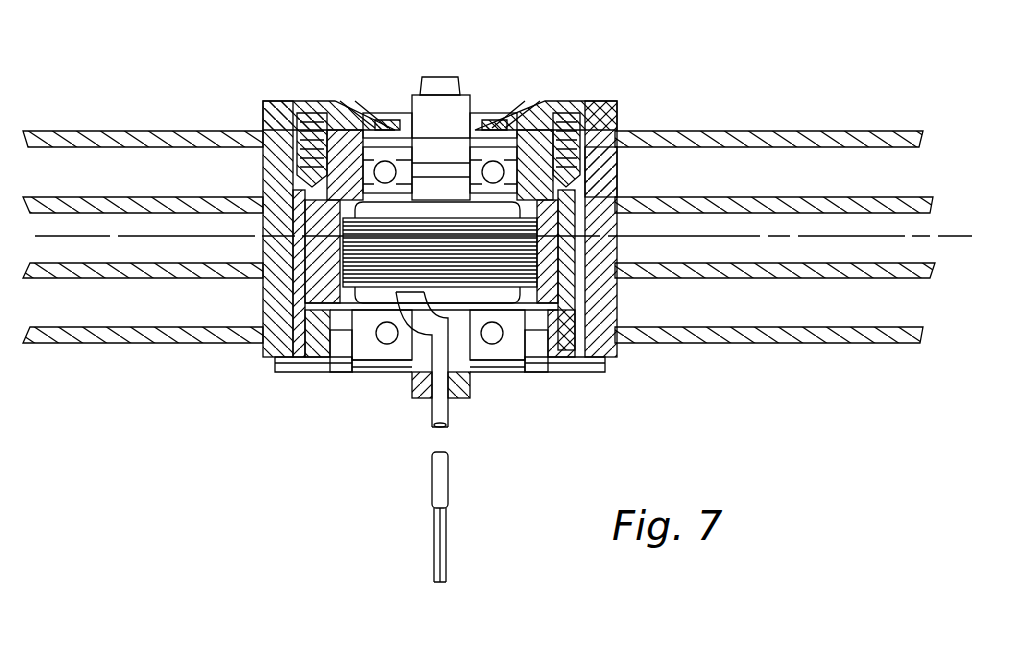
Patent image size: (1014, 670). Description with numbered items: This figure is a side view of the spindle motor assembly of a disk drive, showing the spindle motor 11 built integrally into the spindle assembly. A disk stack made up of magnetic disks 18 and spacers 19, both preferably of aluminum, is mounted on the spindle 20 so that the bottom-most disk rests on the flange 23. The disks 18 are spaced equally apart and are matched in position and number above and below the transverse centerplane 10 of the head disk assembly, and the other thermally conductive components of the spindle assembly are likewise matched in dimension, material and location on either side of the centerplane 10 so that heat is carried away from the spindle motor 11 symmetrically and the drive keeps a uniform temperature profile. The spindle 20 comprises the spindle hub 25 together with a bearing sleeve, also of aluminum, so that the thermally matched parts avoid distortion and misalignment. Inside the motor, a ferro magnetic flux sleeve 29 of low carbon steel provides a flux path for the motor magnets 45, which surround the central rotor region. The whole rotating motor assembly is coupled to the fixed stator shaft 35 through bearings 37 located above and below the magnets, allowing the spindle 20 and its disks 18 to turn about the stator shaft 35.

The transverse centerplane 10 is at (955, 237).
The spindle motor 11 is at (550, 374).
The magnetic disks 18 is at (897, 131).
The spacers 19 is at (618, 165).
The spindle 20 is at (617, 101).
The flange 23 is at (612, 356).
The spindle hub 25 is at (272, 112).
The ferro magnetic flux sleeve 29 is at (303, 292).
The stator shaft 35 is at (440, 100).
The bearings 37 is at (378, 160).
The motor magnets 45 is at (592, 302).